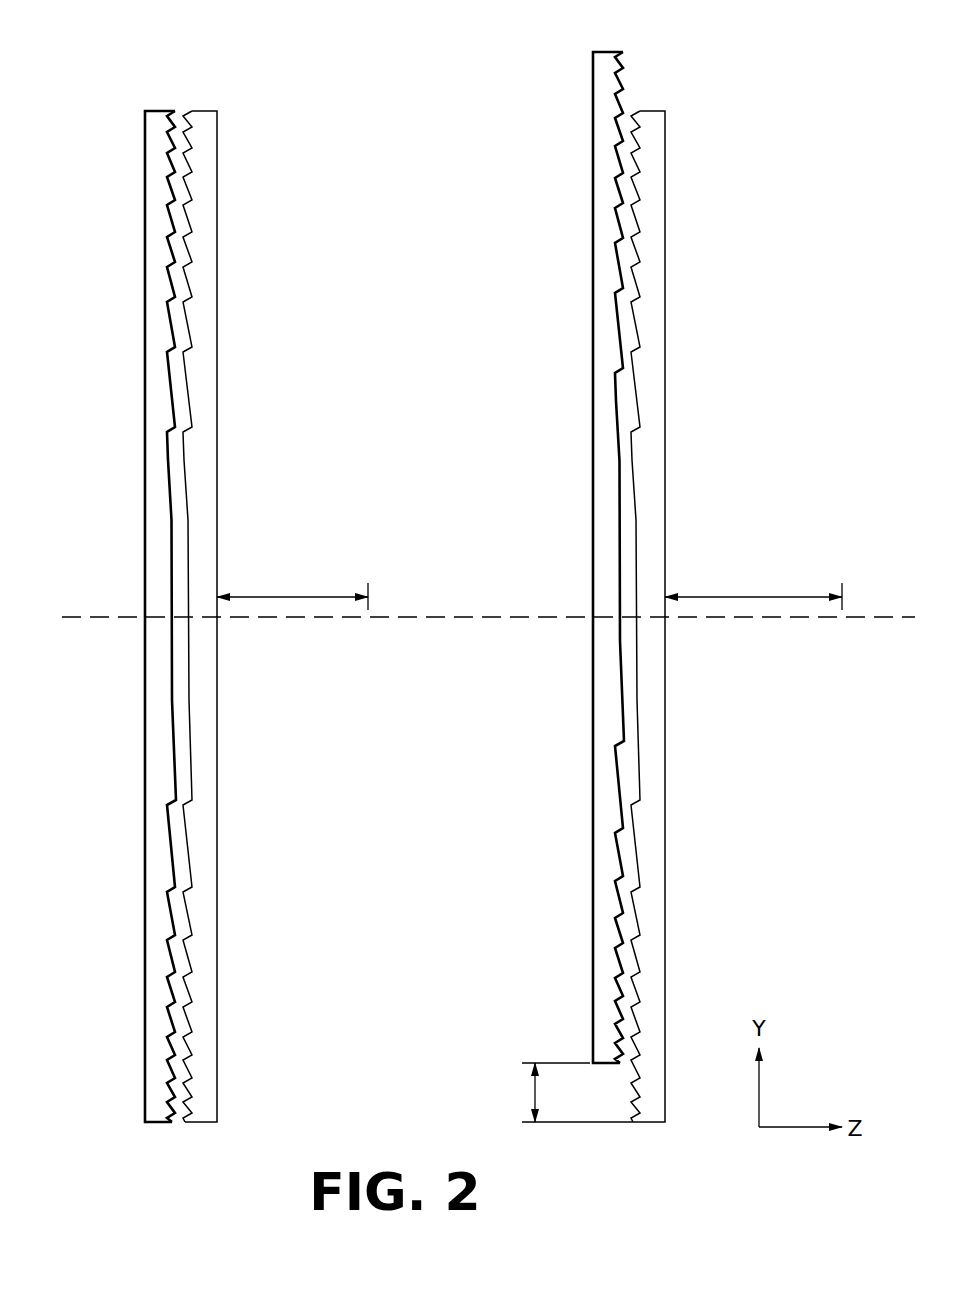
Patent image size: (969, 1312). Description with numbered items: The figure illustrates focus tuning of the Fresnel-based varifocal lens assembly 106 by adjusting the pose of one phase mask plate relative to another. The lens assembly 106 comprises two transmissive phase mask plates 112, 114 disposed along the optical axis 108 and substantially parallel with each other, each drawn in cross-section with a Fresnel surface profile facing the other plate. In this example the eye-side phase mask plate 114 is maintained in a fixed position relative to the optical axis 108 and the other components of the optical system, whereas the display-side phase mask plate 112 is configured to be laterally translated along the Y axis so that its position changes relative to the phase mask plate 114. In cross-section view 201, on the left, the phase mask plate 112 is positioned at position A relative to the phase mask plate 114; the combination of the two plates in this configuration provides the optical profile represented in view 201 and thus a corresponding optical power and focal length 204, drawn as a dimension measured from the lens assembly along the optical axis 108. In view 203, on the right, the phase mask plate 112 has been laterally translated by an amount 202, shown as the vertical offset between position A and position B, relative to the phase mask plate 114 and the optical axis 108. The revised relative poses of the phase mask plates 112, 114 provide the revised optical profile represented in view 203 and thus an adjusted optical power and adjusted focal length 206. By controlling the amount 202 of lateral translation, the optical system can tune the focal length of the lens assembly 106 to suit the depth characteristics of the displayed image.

The cross-section view 201 is at (80, 100).
The view 203 is at (725, 100).
The phase mask plate 112 is at (161, 109).
The phase mask plate 114 is at (203, 109).
The lens assembly 106 is at (154, 1160).
The optical axis 108 is at (105, 622).
The focal length 204 is at (293, 592).
The adjusted focal length 206 is at (755, 592).
The amount of lateral translation 202 is at (534, 1091).